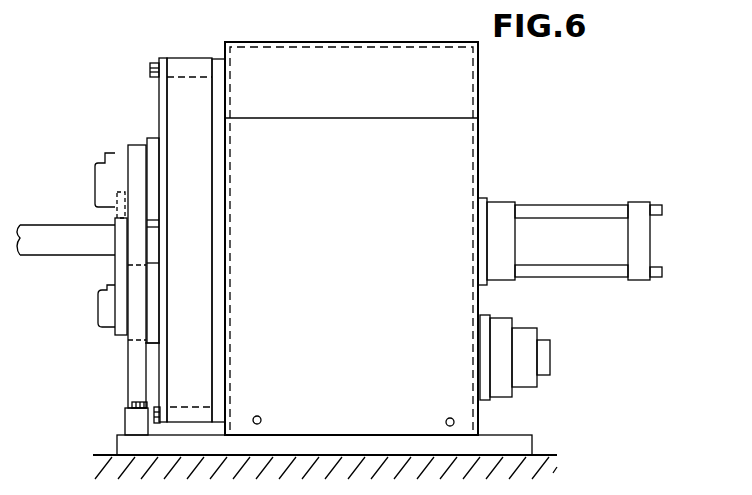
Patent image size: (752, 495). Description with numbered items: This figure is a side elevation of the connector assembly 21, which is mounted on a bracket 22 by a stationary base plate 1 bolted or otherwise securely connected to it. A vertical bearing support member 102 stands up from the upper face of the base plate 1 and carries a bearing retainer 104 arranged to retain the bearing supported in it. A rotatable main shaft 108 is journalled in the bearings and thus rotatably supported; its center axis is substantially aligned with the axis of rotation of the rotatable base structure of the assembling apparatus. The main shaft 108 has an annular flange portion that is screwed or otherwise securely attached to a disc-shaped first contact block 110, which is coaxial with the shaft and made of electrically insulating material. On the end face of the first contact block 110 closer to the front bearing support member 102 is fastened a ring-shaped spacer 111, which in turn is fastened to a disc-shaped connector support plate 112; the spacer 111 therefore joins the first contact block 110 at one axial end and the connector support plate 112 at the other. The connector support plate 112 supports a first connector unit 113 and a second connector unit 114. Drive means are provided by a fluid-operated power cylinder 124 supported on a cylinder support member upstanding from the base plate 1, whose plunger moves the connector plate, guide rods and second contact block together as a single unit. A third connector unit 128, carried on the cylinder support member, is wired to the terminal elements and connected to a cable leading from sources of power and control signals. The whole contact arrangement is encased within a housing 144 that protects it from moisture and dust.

The base plate 1 is at (332, 444).
The connector assembly 21 is at (494, 97).
The bracket 22 is at (548, 455).
The bearing support member 102 is at (128, 383).
The bearing retainer 104 is at (117, 160).
The rotatable main shaft 108 is at (47, 257).
The first contact block 110 is at (222, 58).
The ring-shaped spacer 111 is at (190, 58).
The connector support plate 112 is at (160, 60).
The first connector unit 113 is at (95, 170).
The second connector unit 114 is at (115, 327).
The fluid-operated power cylinder 124 is at (560, 212).
The third connector unit 128 is at (527, 340).
The housing 144 is at (352, 244).